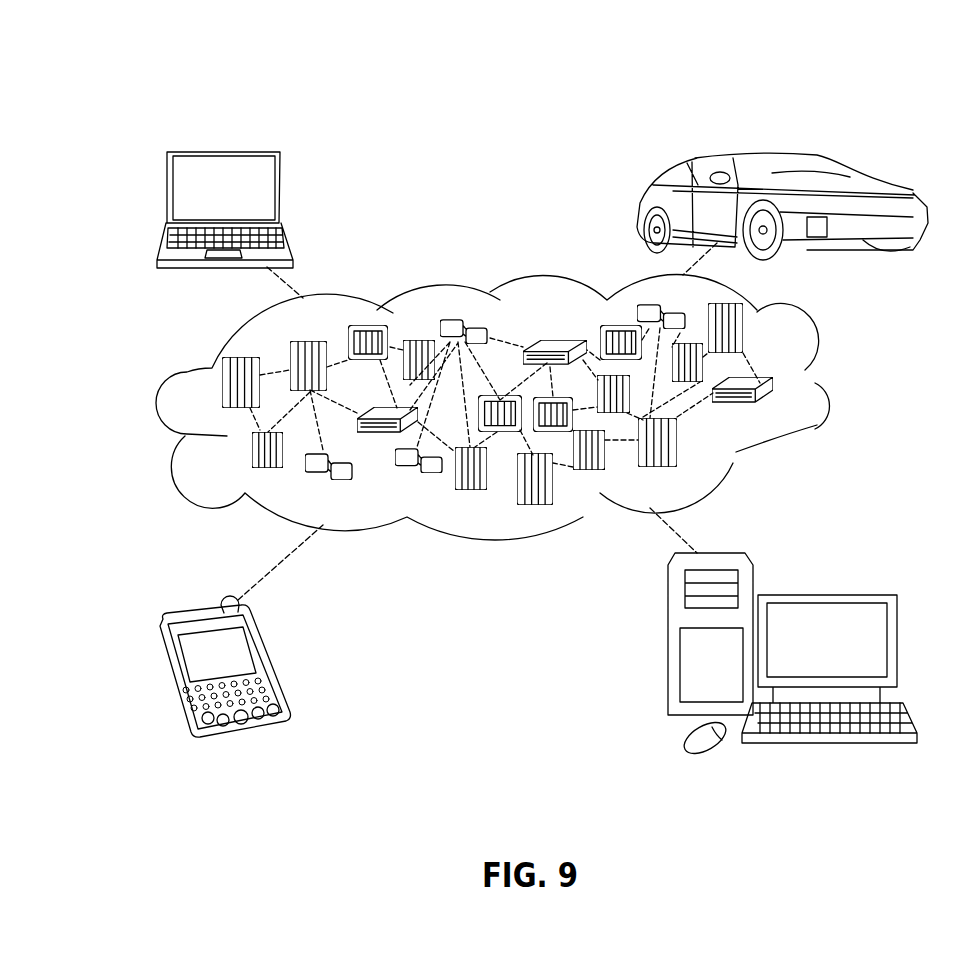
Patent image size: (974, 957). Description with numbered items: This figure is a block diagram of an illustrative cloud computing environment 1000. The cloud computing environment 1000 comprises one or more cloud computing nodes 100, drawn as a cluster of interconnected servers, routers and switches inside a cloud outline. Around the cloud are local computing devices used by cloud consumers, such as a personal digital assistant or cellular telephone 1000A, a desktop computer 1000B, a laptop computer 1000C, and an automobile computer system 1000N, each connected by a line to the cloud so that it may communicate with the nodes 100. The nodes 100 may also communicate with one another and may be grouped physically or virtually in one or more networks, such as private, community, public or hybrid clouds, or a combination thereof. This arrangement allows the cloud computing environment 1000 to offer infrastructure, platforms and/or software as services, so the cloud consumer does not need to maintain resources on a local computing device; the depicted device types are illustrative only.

The cloud computing environment 1000 is at (106, 70).
The cloud computing node 100 is at (785, 413).
The personal digital assistant (PDA) or cellular telephone 1000A is at (273, 665).
The desktop computer 1000B is at (827, 590).
The laptop computer 1000C is at (282, 195).
The automobile computer system 1000N is at (643, 208).